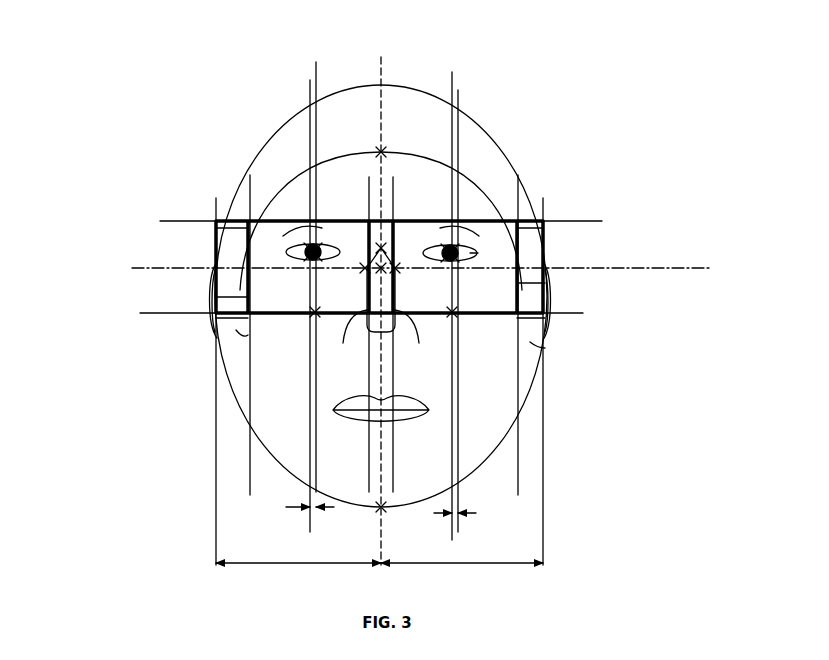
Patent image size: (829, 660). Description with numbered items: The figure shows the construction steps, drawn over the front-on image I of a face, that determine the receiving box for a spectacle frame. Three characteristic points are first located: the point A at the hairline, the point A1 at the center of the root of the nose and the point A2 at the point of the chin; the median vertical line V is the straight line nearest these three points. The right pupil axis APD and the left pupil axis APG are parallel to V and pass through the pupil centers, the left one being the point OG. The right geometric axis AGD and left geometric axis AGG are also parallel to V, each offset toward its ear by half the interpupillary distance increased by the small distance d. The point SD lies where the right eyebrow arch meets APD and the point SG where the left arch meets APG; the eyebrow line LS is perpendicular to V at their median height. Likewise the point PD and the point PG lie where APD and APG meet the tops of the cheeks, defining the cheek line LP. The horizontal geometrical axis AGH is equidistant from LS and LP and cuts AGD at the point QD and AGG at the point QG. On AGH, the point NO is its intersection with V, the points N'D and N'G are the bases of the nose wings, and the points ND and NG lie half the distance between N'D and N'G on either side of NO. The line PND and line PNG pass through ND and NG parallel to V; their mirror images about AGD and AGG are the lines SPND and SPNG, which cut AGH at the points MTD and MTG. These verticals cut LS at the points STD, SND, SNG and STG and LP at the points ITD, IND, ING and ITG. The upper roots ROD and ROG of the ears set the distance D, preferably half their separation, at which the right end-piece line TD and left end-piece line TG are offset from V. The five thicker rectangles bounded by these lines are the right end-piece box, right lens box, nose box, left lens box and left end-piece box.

The image of a face I is at (592, 470).
The line of the eyebrows LS is at (393, 223).
The line of the cheeks LP is at (375, 315).
The horizontal geometrical axis AGH is at (442, 273).
The median vertical line V is at (381, 72).
The point at the hairline A is at (381, 152).
The point at the center of the root of the nose A1 is at (384, 250).
The point at the point of the chin A2 is at (381, 507).
The right pupil axis APD is at (292, 273).
The right geometric axis AGD is at (284, 303).
The left pupil axis APG is at (473, 303).
The left geometric axis AGG is at (480, 309).
The line symmetrical to axis PND SPND is at (250, 176).
The line symmetrical to axis PNG SPNG is at (518, 176).
The line through point ND PND is at (349, 329).
The line through point NG PNG is at (412, 329).
The right end-piece line TD is at (197, 381).
The left end-piece line TG is at (560, 381).
The right eyebrow point SD is at (310, 217).
The left eyebrow point SG is at (536, 196).
The intersection point of axis SPND and eyebrow line STD is at (248, 221).
The intersection point of axis SPNG and eyebrow line STG is at (545, 217).
The intersection point of axis PND and eyebrow line SND is at (342, 207).
The intersection point of axis PNG and eyebrow line SNG is at (381, 218).
The intersection point of AGH and right geometric axis QD is at (327, 249).
The center of the left pupil OG is at (457, 252).
The intersection point of AGH and left geometric axis QG is at (470, 253).
The upper root of the right ear ROD is at (210, 285).
The upper root of the left ear ROG is at (545, 292).
The intersection point of V and AGH NO is at (392, 340).
The intersection point of axis PND and cheek line IND is at (366, 318).
The intersection point of axis PNG and cheek line ING is at (396, 322).
The right nose-wing point N'D is at (344, 277).
The left nose-wing point N'G is at (410, 276).
The right nose point ND is at (364, 292).
The left nose point NG is at (451, 312).
The right cheek point PD is at (314, 313).
The left cheek point PG is at (453, 313).
The intersection point of AGH and line SPND MTD is at (248, 290).
The intersection point of AGH and line SPNG MTG is at (545, 283).
The intersection point of axis SPND and cheek line ITD is at (248, 335).
The intersection point of axis SPNG and cheek line ITG is at (545, 348).
The end-piece offset distance D is at (379, 555).
The geometric axis offset distance d is at (372, 509).